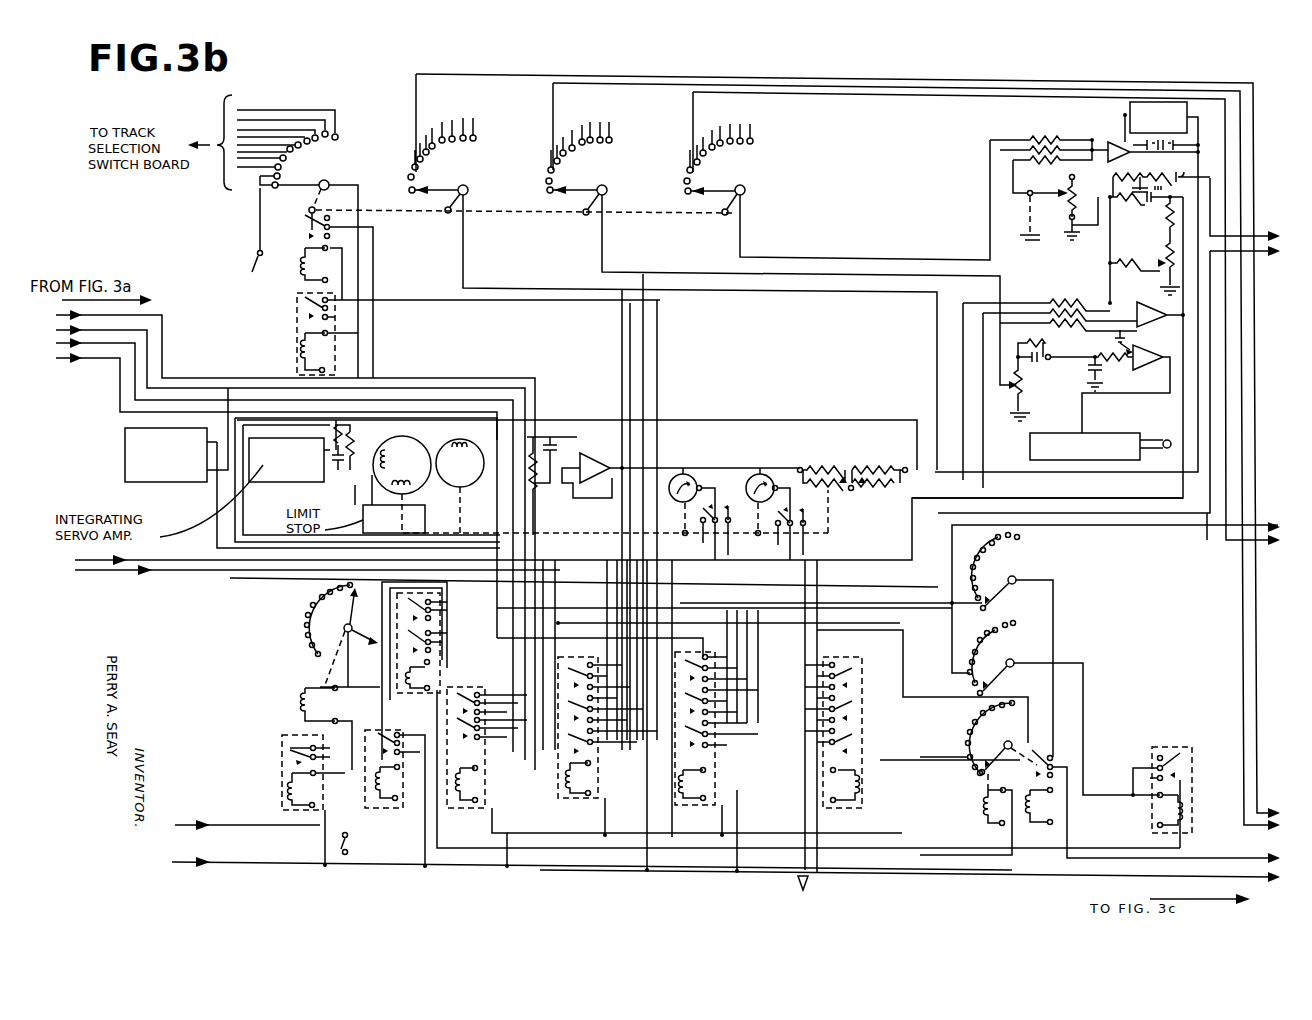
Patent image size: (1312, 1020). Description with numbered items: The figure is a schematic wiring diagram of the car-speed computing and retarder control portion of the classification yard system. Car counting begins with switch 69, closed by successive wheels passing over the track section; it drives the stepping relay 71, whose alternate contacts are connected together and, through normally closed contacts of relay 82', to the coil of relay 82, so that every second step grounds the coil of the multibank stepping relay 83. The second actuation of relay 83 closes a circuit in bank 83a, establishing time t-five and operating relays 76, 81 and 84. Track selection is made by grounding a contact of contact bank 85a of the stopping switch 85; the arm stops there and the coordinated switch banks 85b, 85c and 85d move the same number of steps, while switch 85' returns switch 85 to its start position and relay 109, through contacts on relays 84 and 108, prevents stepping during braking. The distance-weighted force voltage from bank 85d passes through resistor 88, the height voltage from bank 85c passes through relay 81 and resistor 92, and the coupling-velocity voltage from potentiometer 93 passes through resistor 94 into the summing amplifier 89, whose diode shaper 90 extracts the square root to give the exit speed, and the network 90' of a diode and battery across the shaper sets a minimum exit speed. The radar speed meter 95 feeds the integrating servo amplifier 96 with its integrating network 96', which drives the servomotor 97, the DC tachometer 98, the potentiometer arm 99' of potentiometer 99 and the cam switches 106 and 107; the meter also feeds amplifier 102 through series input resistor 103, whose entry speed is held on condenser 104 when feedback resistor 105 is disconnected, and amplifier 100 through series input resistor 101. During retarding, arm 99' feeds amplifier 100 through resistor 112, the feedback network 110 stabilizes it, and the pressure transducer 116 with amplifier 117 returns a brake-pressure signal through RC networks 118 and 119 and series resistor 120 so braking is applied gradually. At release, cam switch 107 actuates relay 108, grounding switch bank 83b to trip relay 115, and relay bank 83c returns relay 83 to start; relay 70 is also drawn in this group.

The contact bank 85a is at (297, 244).
The switch bank 85b is at (672, 272).
The switch bank 85c is at (773, 203).
The switch bank 85d is at (837, 176).
The stopping switch 85 is at (320, 295).
The switch 85' is at (234, 259).
The relay 109 is at (300, 308).
The resistor 88 is at (1040, 144).
The resistor 92 is at (1015, 148).
The resistor 94 is at (1040, 168).
The potentiometer 93 is at (1068, 205).
The summing amplifier 89 is at (1128, 158).
The diode shaper 90 is at (1123, 119).
The network 90' is at (1099, 131).
The feedback network 110 is at (1159, 237).
The series input resistor 101 is at (1055, 303).
The resistor 112 is at (1068, 312).
The series resistor 120 is at (1068, 326).
The amplifier 100 is at (1137, 312).
The amplifier 117 is at (1172, 338).
The RC network 118 is at (1047, 372).
The RC network 119 is at (1113, 372).
The pressure transducer 116 is at (1065, 433).
The radar speed meter 95 is at (198, 482).
The integrating servo amplifier 96 is at (286, 469).
The integrating network 96' is at (327, 460).
The servomotor 97 is at (380, 480).
The DC tachometer 98 is at (455, 487).
The feedback resistor 105 is at (530, 450).
The condenser 104 is at (565, 430).
The series input resistor 103 is at (540, 493).
The amplifier 102 is at (583, 458).
The cam switch 106 is at (697, 475).
The cam switch 107 is at (765, 475).
The potentiometer 99 is at (823, 465).
The potentiometer arm 99' is at (878, 465).
The stepping relay 71 is at (317, 666).
The relay 82' is at (433, 671).
The relay 82 is at (395, 782).
The relay 76 is at (460, 693).
The relay 70 is at (282, 787).
The switch 69 is at (348, 843).
The relay 81 is at (558, 748).
The relay 84 is at (672, 793).
The relay 108 is at (862, 793).
The relay bank 83c is at (1012, 645).
The switch bank 83b is at (1064, 709).
The bank 83a is at (1002, 746).
The multibank stepping relay 83 is at (985, 800).
The relay 115 is at (1150, 812).